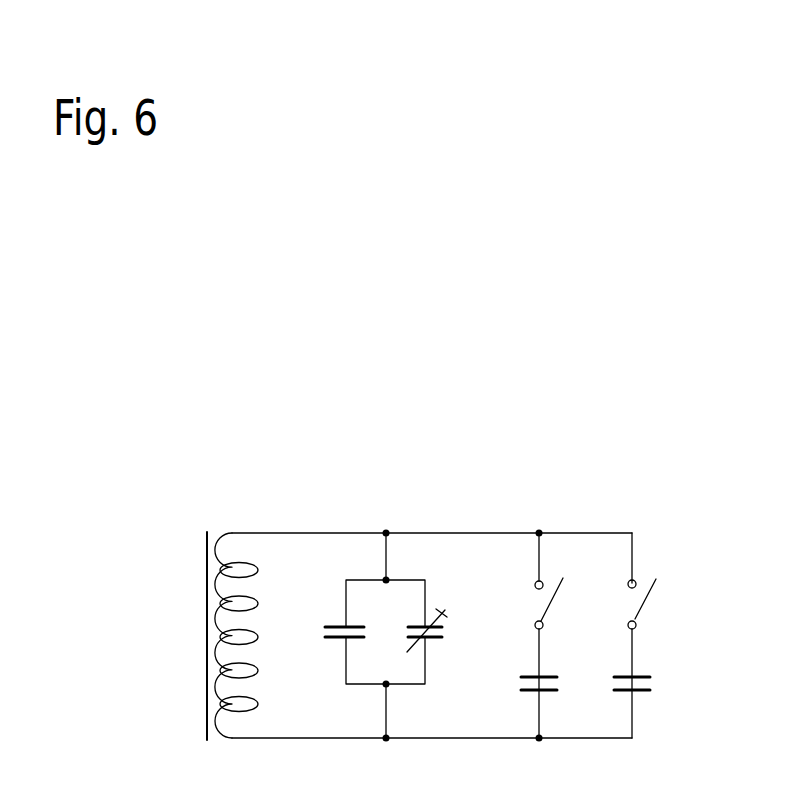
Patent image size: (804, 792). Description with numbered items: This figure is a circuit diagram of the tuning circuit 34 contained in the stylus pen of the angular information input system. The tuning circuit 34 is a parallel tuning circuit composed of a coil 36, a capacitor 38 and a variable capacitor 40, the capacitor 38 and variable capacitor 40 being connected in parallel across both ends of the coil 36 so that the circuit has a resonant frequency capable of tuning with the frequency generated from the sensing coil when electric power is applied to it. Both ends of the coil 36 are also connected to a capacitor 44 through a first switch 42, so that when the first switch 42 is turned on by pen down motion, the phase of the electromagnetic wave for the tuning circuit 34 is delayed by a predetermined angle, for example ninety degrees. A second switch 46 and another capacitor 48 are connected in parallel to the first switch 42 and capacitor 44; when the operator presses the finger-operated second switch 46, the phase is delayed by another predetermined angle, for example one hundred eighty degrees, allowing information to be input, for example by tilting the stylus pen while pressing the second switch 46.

The tuning circuit 34 is at (425, 514).
The coil 36 is at (207, 548).
The capacitor 38 is at (337, 624).
The variable capacitor 40 is at (436, 641).
The first switch 42 is at (550, 601).
The capacitor 44 is at (532, 675).
The second switch 46 is at (645, 601).
The capacitor 48 is at (646, 676).